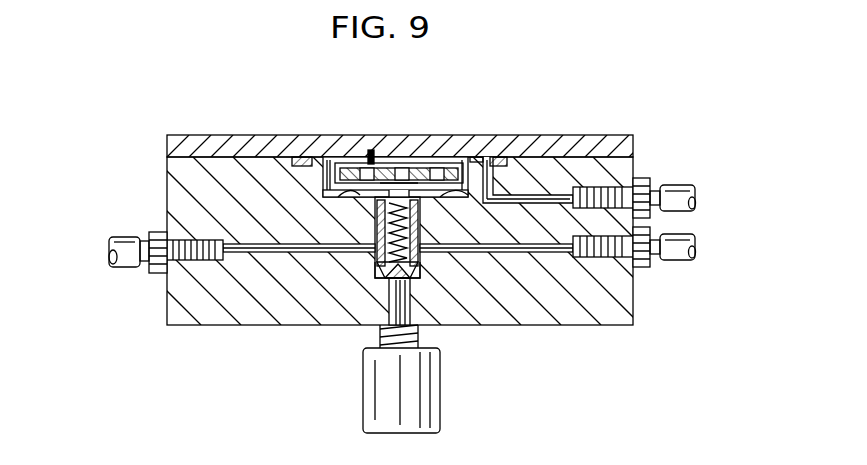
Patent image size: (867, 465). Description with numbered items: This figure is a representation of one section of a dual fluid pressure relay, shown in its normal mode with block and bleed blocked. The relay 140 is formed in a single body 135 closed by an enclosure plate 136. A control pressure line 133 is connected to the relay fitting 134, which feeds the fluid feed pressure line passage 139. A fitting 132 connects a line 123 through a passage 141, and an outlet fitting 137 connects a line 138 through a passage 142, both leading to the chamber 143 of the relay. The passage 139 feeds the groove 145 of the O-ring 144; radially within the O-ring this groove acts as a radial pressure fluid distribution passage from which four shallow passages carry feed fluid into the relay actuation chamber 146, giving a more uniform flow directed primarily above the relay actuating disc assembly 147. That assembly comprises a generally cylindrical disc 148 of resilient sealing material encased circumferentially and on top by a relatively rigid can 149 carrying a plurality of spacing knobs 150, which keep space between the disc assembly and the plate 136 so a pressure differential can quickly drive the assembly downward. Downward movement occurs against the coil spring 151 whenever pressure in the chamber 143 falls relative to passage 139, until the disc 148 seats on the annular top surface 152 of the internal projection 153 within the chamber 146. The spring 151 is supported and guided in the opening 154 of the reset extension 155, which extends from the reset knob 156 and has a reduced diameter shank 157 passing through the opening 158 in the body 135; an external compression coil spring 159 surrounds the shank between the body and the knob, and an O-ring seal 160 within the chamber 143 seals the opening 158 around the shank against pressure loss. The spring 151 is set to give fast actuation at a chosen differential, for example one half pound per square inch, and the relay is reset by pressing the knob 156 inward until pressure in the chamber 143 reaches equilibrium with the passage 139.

The line 123 is at (690, 262).
The fitting 132 is at (648, 268).
The control pressure line 133 is at (685, 188).
The relay fitting 134 is at (645, 180).
The body 135 is at (560, 325).
The enclosure plate 136 is at (200, 135).
The outlet fitting 137 is at (157, 232).
The line 138 is at (120, 237).
The fluid feed pressure line passage 139 is at (560, 190).
The relay 140 is at (403, 135).
The passage 141 is at (540, 252).
The passage 142 is at (290, 255).
The chamber 143 is at (377, 258).
The O-ring 144 is at (502, 158).
The groove 145 is at (302, 157).
The relay actuation chamber 146 is at (325, 195).
The relay actuating disc assembly 147 is at (387, 163).
The disc 148 is at (372, 150).
The can 149 is at (328, 182).
The spacing knobs 150 is at (340, 163).
The coil spring 151 is at (406, 222).
The annular top surface 152 is at (350, 192).
The internal projection 153 is at (462, 198).
The opening 154 is at (392, 216).
The reset extension 155 is at (420, 265).
The reset knob 156 is at (440, 392).
The reduced diameter shank 157 is at (392, 305).
The opening 158 is at (413, 297).
The external compression coil spring 159 is at (423, 335).
The O-ring seal 160 is at (415, 272).